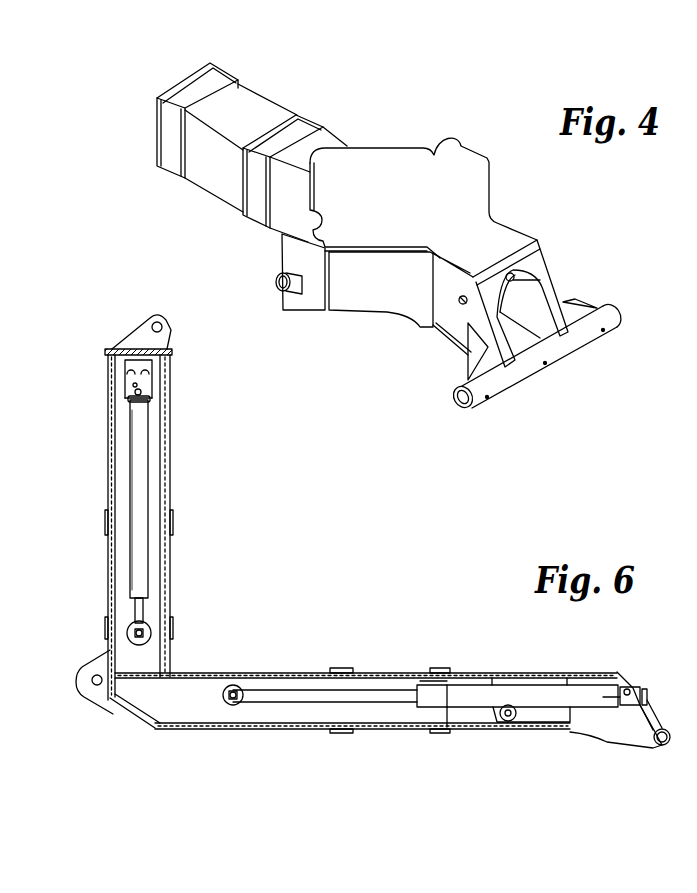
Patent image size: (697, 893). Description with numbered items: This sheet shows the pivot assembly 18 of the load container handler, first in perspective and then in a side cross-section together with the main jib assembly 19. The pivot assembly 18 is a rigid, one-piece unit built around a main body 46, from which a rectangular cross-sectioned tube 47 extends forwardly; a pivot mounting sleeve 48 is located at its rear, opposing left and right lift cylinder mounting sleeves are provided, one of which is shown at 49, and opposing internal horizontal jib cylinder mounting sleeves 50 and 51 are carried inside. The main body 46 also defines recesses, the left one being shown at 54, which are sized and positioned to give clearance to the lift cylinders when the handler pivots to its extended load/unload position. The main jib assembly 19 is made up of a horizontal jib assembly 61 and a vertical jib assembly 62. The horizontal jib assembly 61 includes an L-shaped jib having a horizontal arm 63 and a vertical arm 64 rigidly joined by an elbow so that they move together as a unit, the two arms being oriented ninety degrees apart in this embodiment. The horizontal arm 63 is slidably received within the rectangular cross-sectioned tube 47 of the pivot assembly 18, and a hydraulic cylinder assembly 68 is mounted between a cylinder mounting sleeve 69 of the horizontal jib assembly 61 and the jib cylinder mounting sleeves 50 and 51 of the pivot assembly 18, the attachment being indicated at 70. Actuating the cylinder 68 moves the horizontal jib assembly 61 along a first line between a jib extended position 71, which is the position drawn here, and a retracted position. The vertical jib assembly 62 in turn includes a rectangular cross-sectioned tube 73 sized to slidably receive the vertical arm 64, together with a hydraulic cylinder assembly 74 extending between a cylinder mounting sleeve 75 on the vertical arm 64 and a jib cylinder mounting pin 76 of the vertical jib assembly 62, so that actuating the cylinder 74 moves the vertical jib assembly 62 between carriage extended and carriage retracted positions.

In FIG. 4, the pivot assembly 18 is at (360, 93).
In FIG. 6, the pivot assembly 18 is at (478, 735).
In FIG. 4, the main body 46 is at (480, 199).
In FIG. 4, the rectangular cross-sectioned tube 47 is at (213, 193).
In FIG. 6, the rectangular cross-sectioned tube 47 is at (373, 670).
In FIG. 4, the pivot mounting sleeve 48 is at (527, 363).
In FIG. 6, the pivot mounting sleeve 48 is at (653, 742).
In FIG. 4, the lift cylinder mounting sleeve 49 is at (303, 296).
In FIG. 4, the horizontal jib cylinder mounting sleeve 50 is at (455, 312).
In FIG. 4, the horizontal jib cylinder mounting sleeve 51 is at (535, 292).
In FIG. 4, the recess 54 is at (395, 318).
In FIG. 6, the jib extended position 71 is at (312, 530).
In FIG. 6, the vertical jib assembly 62 is at (170, 450).
In FIG. 6, the jib cylinder mounting pin 76 is at (146, 392).
In FIG. 6, the hydraulic cylinder assembly 74 is at (133, 433).
In FIG. 6, the vertical arm 64 is at (153, 555).
In FIG. 6, the cylinder mounting sleeve 75 is at (150, 634).
In FIG. 6, the rectangular cross-sectioned tube 73 is at (110, 557).
In FIG. 6, the horizontal arm 63 is at (213, 731).
In FIG. 6, the horizontal jib assembly 61 is at (292, 670).
In FIG. 6, the main jib assembly 19 is at (298, 730).
In FIG. 6, the cylinder mounting sleeve 69 is at (239, 706).
In FIG. 6, the hydraulic cylinder assembly 68 is at (430, 707).
In FIG. 6, the cylinder mounting location 70 is at (620, 706).